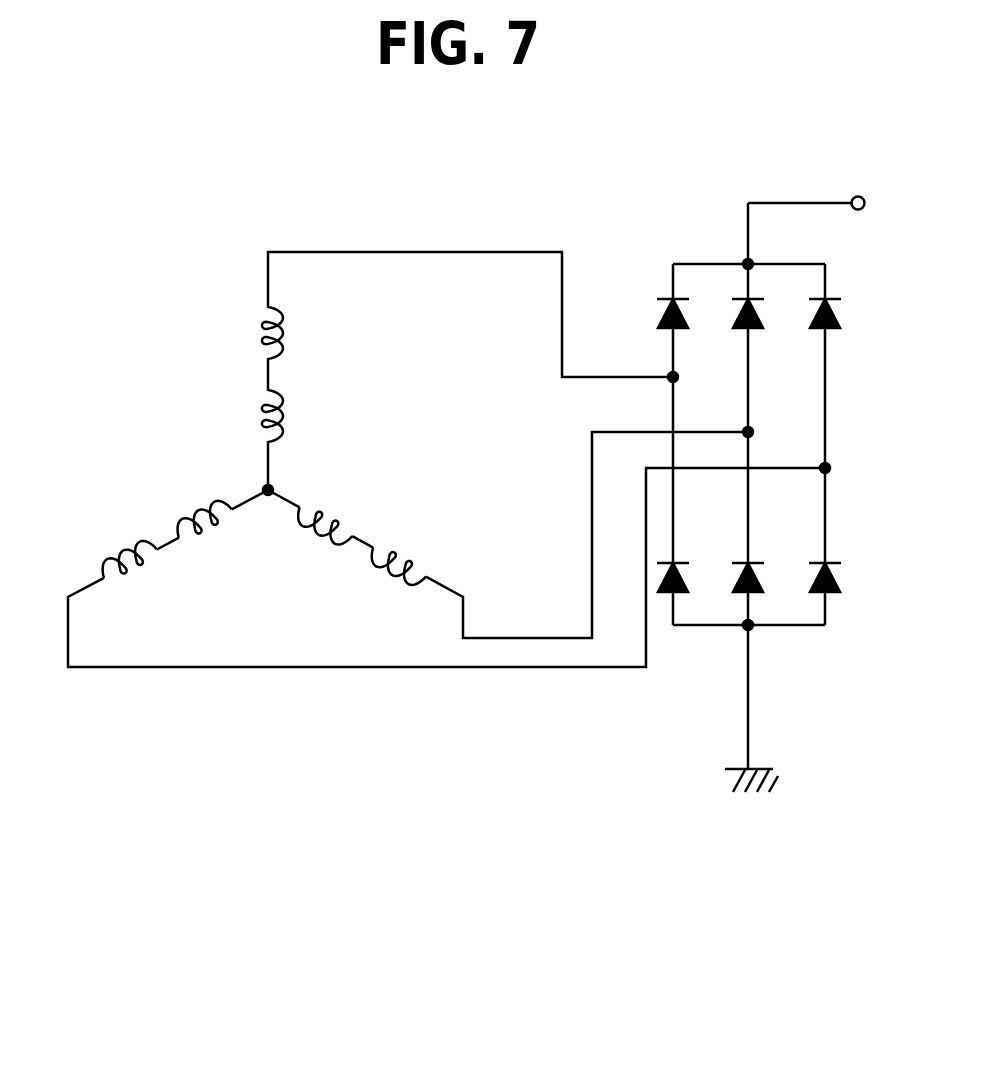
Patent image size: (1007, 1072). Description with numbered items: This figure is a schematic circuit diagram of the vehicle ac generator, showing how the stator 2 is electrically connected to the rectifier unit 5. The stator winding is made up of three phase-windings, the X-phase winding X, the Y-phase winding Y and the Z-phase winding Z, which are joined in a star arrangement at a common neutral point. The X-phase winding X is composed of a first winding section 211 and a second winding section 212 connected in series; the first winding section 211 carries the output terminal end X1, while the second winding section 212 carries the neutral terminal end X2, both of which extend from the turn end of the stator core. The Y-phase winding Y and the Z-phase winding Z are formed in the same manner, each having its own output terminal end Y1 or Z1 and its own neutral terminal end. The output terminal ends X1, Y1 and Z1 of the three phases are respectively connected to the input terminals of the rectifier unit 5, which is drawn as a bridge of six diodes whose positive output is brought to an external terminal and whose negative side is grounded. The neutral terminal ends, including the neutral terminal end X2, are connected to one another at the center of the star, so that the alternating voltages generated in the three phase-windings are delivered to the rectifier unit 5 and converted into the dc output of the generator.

The stator 2 is at (446, 396).
The first winding section 211 is at (290, 330).
The second winding section 212 is at (290, 413).
The rectifier unit 5 is at (745, 495).
The X-phase winding X is at (226, 320).
The Y-phase winding Y is at (170, 497).
The Z-phase winding Z is at (379, 511).
The output terminal end X1 is at (670, 377).
The output terminal end Y1 is at (826, 467).
The output terminal end Z1 is at (750, 432).
The neutral terminal end X2 is at (267, 496).